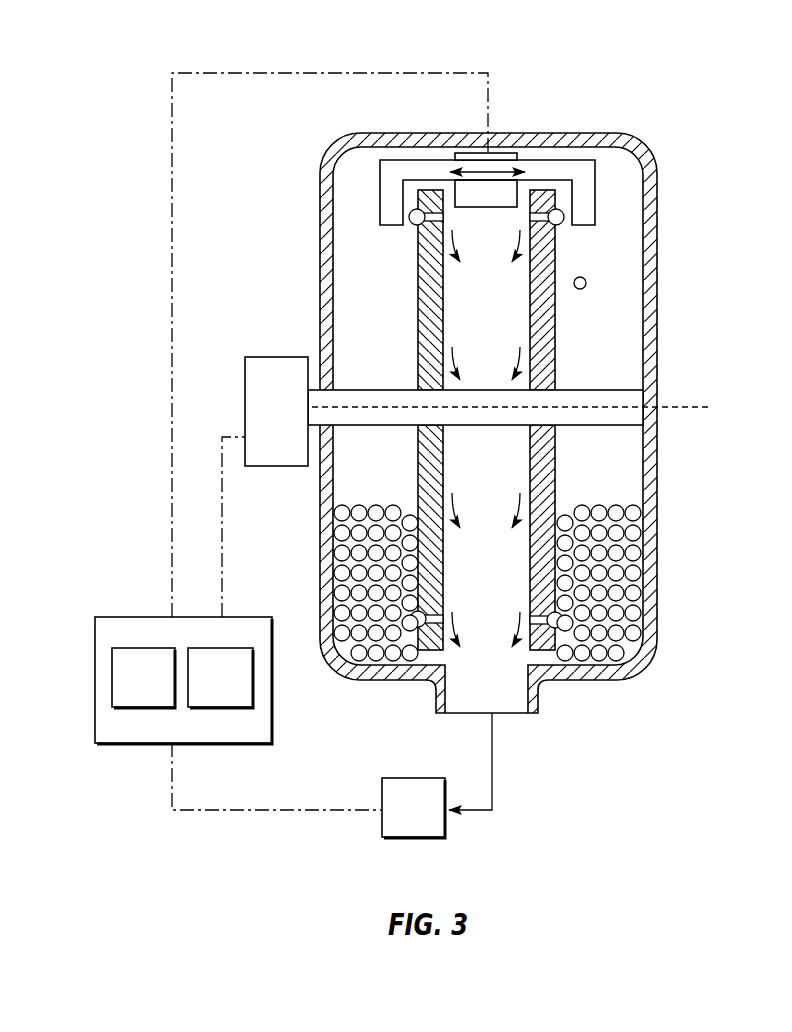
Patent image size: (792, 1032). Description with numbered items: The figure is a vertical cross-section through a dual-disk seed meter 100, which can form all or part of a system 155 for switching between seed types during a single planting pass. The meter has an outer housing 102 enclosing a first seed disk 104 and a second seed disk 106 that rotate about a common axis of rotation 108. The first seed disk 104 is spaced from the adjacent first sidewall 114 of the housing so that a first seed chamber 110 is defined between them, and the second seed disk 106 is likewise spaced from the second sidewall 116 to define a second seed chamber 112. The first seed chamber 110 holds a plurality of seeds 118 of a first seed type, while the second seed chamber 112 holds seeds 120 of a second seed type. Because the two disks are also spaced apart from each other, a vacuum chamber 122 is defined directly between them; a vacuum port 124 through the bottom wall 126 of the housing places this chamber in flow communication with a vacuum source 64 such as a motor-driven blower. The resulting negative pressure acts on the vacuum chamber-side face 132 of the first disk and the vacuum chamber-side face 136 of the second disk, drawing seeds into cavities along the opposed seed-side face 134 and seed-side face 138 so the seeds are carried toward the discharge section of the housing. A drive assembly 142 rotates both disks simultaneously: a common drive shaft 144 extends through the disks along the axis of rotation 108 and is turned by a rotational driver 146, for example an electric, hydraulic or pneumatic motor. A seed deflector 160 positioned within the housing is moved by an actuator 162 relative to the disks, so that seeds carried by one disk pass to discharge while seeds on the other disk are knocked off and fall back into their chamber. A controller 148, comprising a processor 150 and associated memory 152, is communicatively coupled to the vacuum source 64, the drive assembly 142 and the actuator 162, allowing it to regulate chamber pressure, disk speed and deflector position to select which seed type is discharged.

The dual-disk seed meter 100 is at (558, 107).
The outer housing 102 is at (640, 132).
The first seed disk 104 is at (416, 263).
The second seed disk 106 is at (559, 317).
The axis of rotation 108 is at (696, 430).
The first seed chamber 110 is at (367, 349).
The second seed chamber 112 is at (598, 347).
The first sidewall 114 is at (320, 330).
The second sidewall 116 is at (657, 476).
The seeds of a first seed type 118 is at (333, 531).
The seeds of a second seed type 120 is at (643, 531).
The vacuum chamber 122 is at (486, 438).
The vacuum port 124 is at (500, 692).
The bottom wall 126 is at (405, 679).
The vacuum chamber-side face 132 is at (448, 301).
The seed-side face 134 is at (418, 320).
The vacuum chamber-side face 136 is at (530, 445).
The seed-side face 138 is at (555, 472).
The drive assembly 142 is at (243, 357).
The drive shaft 144 is at (610, 389).
The rotational driver 146 is at (256, 417).
The controller 148 is at (160, 649).
The processor 150 is at (143, 678).
The memory device 152 is at (220, 678).
The system for switching between seed types 155 is at (171, 820).
The seed deflector 160 is at (382, 158).
The actuator 162 is at (465, 151).
The vacuum source 64 is at (413, 808).